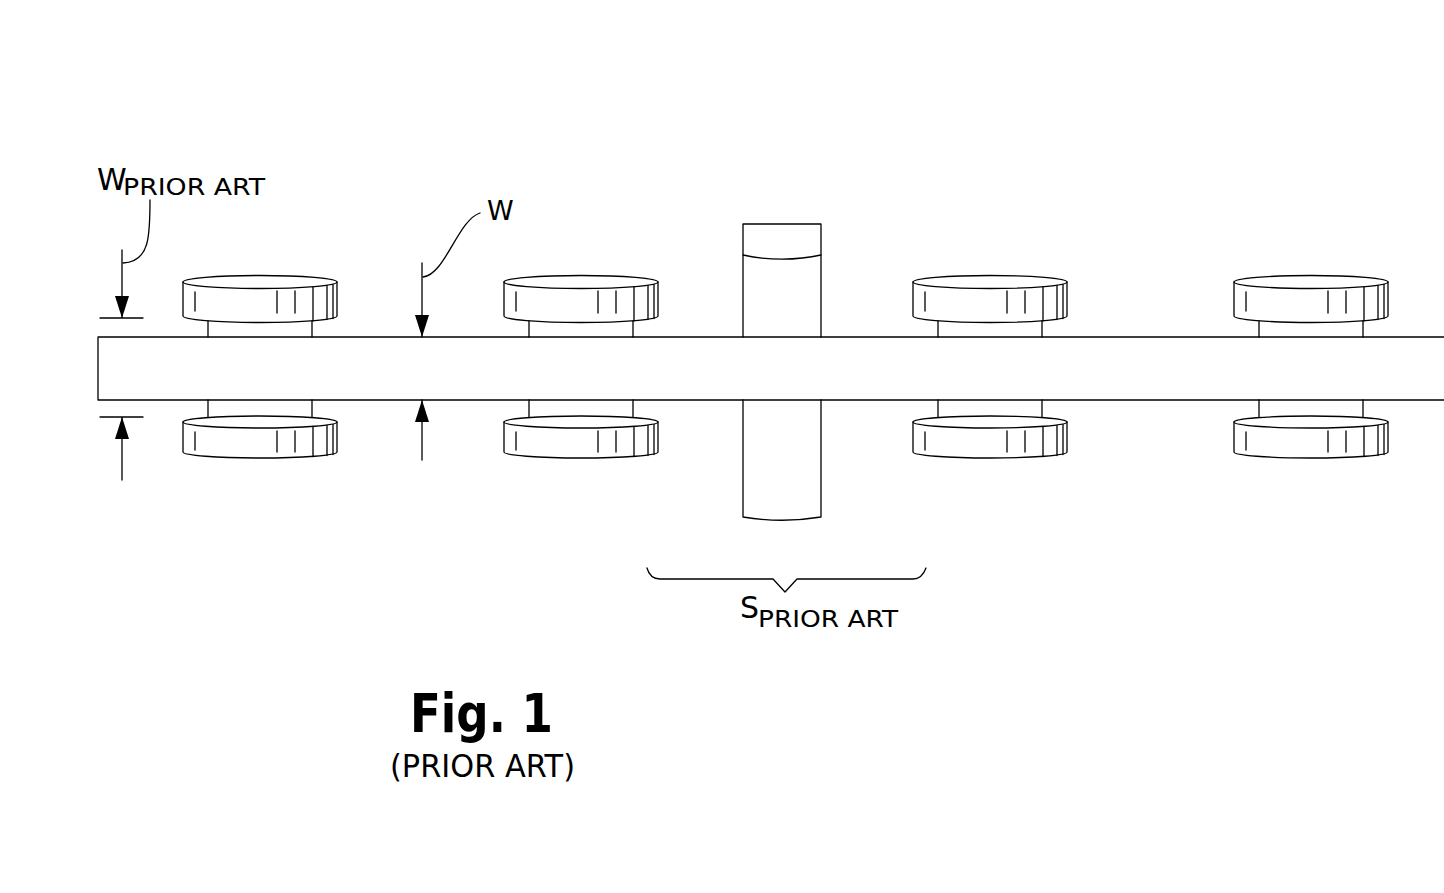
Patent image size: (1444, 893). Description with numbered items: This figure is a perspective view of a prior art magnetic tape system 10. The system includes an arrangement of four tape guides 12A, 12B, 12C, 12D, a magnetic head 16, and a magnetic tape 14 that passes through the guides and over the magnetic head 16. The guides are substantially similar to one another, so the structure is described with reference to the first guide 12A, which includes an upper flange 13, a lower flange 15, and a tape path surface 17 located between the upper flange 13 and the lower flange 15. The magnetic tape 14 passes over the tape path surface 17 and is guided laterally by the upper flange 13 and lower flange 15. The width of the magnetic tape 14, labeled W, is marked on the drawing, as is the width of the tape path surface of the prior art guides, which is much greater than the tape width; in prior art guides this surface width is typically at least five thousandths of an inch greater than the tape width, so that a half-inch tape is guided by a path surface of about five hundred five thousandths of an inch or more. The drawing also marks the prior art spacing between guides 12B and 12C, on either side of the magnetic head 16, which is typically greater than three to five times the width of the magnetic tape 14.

The magnetic tape system 10 is at (946, 82).
The tape guide 12A is at (281, 252).
The tape guide 12B is at (584, 279).
The tape guide 12C is at (991, 281).
The tape guide 12D is at (1289, 281).
The upper flange 13 is at (340, 264).
The magnetic tape 14 is at (470, 375).
The lower flange 15 is at (294, 478).
The magnetic head 16 is at (777, 237).
The tape path surface 17 is at (307, 473).